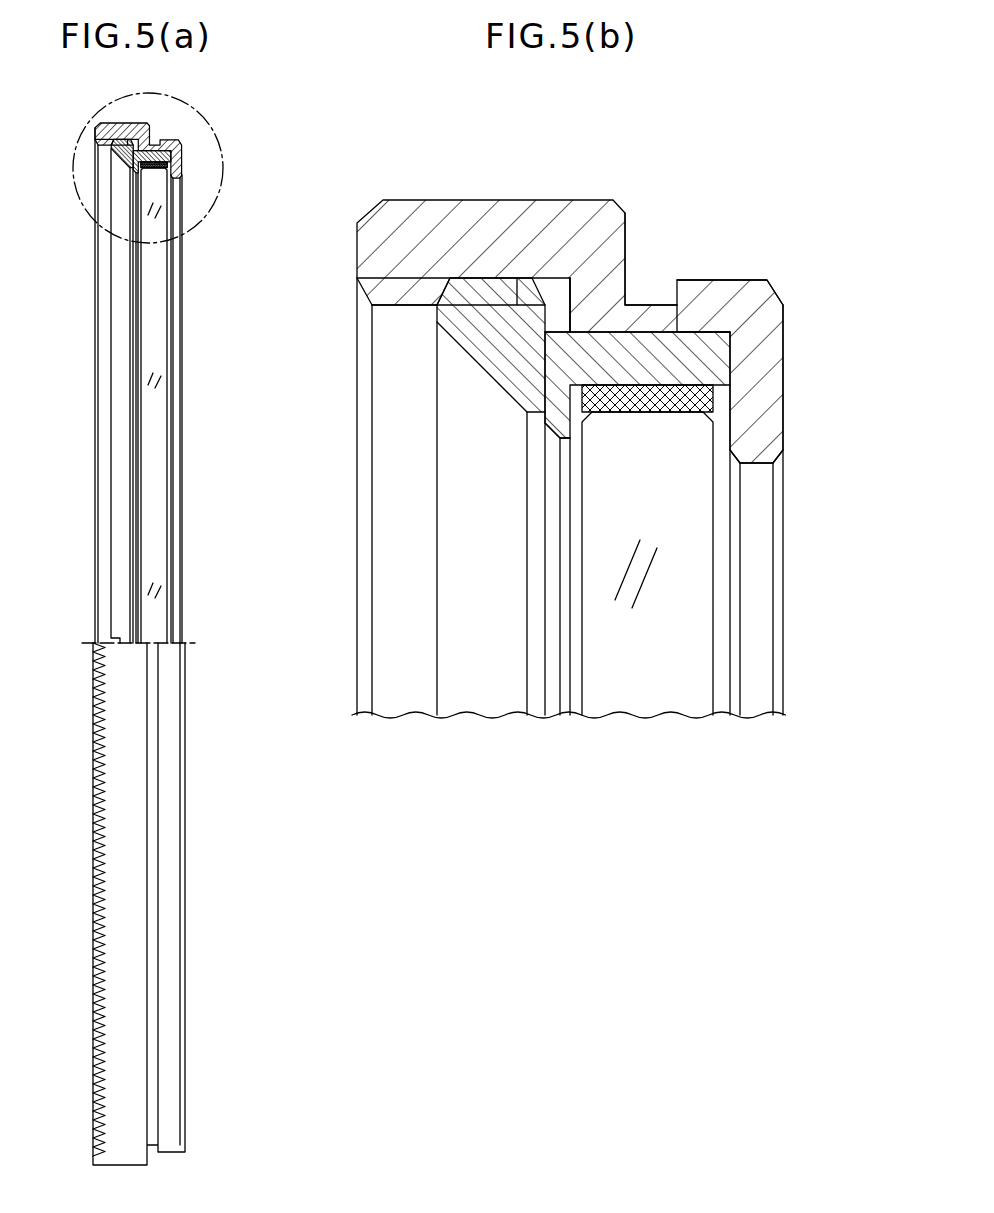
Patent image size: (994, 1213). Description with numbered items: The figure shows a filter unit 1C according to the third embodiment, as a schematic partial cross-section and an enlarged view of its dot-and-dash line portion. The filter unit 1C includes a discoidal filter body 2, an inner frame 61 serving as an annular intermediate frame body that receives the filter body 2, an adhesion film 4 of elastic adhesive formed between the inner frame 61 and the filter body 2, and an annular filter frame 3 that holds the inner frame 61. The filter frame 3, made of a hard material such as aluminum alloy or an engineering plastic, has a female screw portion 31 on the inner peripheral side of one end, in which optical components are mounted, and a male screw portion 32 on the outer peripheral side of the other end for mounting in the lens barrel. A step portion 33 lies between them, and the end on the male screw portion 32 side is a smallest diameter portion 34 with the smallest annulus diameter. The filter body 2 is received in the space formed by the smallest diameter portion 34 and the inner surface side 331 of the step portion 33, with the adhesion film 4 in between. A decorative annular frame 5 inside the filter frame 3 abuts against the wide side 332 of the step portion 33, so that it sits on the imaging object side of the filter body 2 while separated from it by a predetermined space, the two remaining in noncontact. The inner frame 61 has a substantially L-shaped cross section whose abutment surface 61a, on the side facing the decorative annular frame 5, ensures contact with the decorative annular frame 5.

In FIG. 5A, the filter unit 1C is at (208, 894).
In FIG. 5B, the filter body 2 is at (675, 635).
In FIG. 5A, the filter body 2 is at (163, 530).
In FIG. 5B, the filter frame 3 is at (600, 196).
In FIG. 5A, the filter frame 3 is at (187, 1038).
In FIG. 5B, the female screw portion 31 is at (417, 293).
In FIG. 5B, the male screw portion 32 is at (727, 292).
In FIG. 5B, the step portion 33 is at (605, 292).
In FIG. 5B, the inner surface side 331 is at (673, 340).
In FIG. 5B, the wide side 332 is at (567, 290).
In FIG. 5B, the smallest diameter portion 34 is at (757, 412).
In FIG. 5B, the adhesion film 4 is at (653, 407).
In FIG. 5A, the adhesion film 4 is at (153, 165).
In FIG. 5B, the decorative annular frame 5 is at (480, 335).
In FIG. 5A, the decorative annular frame 5 is at (113, 148).
In FIG. 5B, the inner frame 61 is at (713, 360).
In FIG. 5A, the inner frame 61 is at (160, 143).
In FIG. 5B, the abutment surface 61a is at (557, 400).